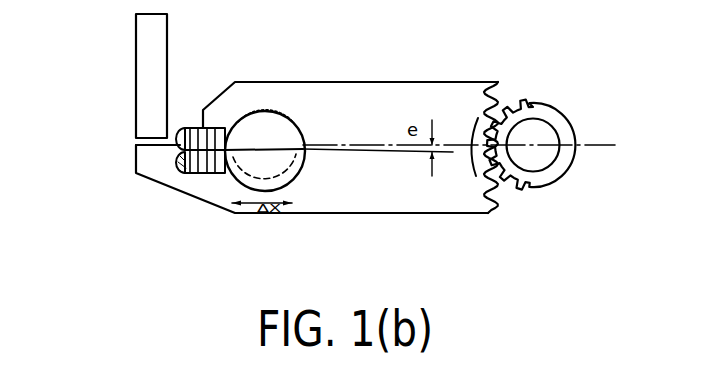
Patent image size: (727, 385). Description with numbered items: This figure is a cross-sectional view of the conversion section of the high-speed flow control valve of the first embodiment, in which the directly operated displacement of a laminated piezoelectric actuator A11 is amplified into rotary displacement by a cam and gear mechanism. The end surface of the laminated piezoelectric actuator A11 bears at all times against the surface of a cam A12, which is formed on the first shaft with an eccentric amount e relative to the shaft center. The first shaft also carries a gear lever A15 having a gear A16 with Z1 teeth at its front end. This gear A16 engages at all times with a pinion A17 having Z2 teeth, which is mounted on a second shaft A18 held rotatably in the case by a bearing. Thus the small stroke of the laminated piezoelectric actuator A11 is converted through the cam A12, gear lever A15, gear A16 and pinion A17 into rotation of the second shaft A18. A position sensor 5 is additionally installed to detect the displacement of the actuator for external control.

The position sensor 5 is at (135, 78).
The laminated piezoelectric actuator A11 is at (197, 128).
The cam A12 is at (292, 183).
The gear lever A15 is at (403, 82).
The gear A16 is at (495, 82).
The pinion A17 is at (540, 103).
The second shaft A18 is at (539, 167).